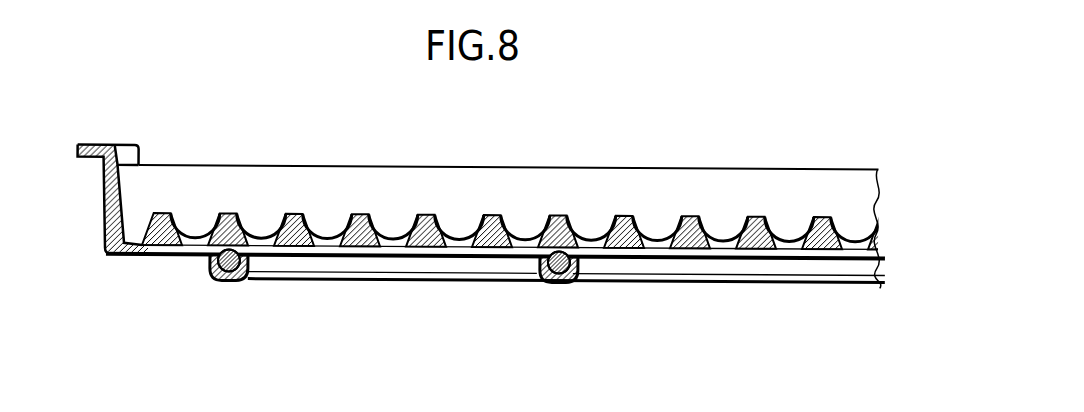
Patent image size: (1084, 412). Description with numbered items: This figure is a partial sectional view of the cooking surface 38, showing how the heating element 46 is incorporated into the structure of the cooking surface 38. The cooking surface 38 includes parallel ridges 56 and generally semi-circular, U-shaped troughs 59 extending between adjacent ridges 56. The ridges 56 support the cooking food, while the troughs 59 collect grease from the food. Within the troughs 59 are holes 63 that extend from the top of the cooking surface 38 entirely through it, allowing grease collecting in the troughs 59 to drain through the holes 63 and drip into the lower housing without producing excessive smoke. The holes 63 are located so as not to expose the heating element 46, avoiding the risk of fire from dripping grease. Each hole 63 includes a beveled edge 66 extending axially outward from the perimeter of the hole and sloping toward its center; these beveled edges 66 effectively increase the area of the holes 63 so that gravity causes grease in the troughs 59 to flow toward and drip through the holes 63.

The cooking surface 38 is at (686, 146).
The ridges 56 is at (297, 212).
The troughs 59 is at (380, 222).
The beveled edge 66 is at (471, 238).
The holes 63 is at (257, 259).
The heating element 46 is at (544, 282).